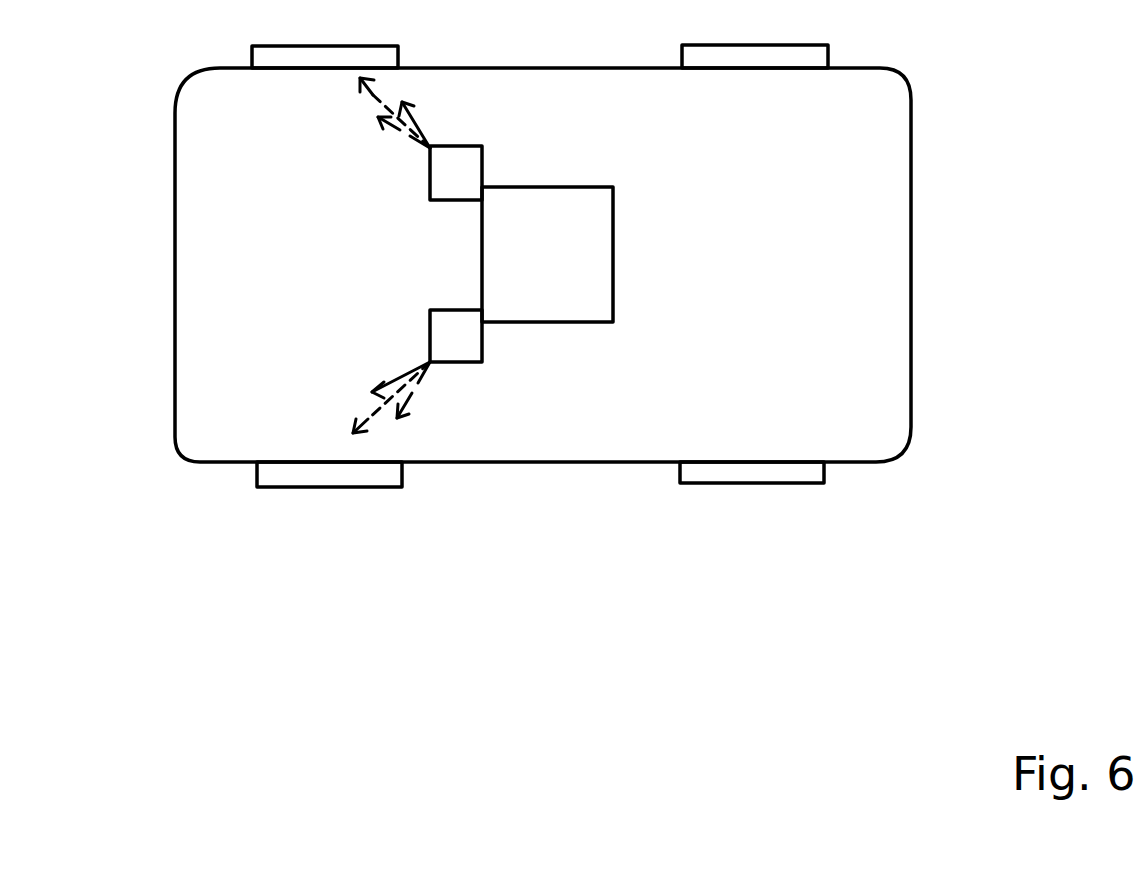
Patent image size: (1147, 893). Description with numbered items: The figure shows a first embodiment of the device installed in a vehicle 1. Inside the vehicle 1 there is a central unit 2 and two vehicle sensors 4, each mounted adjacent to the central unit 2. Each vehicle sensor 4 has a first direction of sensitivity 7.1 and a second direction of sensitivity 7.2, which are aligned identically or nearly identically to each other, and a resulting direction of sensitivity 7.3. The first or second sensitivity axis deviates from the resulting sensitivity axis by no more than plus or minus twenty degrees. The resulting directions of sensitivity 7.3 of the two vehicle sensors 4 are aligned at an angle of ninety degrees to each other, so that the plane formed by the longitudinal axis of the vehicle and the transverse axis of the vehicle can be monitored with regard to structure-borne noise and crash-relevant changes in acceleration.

The vehicle 1 is at (907, 80).
The central unit 2 is at (613, 256).
The vehicle sensor 4 is at (483, 152).
The first direction of sensitivity 7.1 is at (418, 114).
The second direction of sensitivity 7.2 is at (405, 133).
The resulting direction of sensitivity 7.3 is at (378, 93).